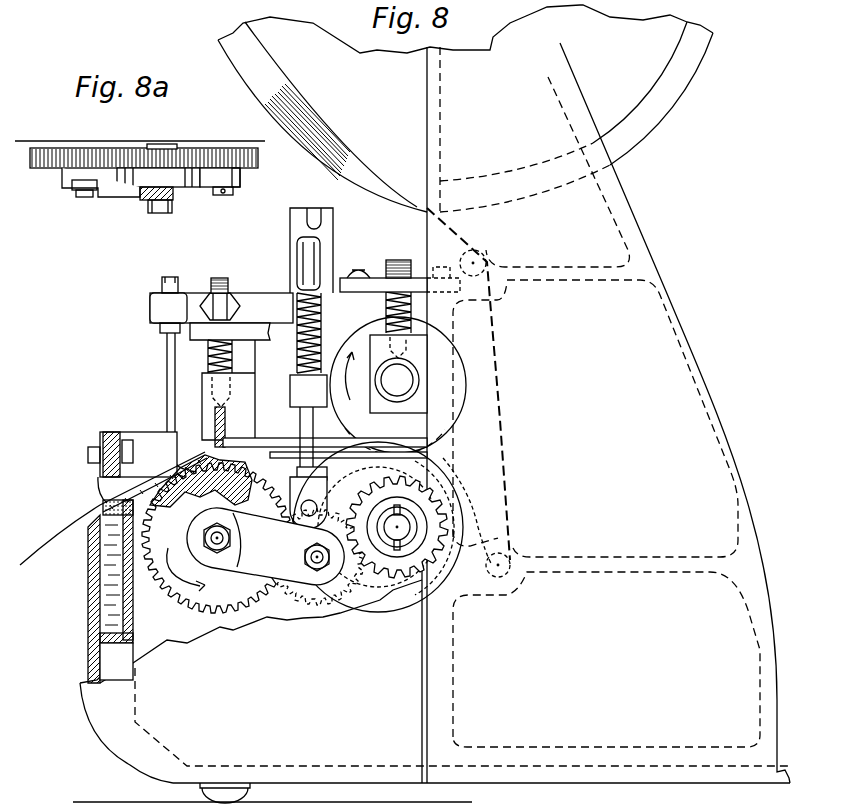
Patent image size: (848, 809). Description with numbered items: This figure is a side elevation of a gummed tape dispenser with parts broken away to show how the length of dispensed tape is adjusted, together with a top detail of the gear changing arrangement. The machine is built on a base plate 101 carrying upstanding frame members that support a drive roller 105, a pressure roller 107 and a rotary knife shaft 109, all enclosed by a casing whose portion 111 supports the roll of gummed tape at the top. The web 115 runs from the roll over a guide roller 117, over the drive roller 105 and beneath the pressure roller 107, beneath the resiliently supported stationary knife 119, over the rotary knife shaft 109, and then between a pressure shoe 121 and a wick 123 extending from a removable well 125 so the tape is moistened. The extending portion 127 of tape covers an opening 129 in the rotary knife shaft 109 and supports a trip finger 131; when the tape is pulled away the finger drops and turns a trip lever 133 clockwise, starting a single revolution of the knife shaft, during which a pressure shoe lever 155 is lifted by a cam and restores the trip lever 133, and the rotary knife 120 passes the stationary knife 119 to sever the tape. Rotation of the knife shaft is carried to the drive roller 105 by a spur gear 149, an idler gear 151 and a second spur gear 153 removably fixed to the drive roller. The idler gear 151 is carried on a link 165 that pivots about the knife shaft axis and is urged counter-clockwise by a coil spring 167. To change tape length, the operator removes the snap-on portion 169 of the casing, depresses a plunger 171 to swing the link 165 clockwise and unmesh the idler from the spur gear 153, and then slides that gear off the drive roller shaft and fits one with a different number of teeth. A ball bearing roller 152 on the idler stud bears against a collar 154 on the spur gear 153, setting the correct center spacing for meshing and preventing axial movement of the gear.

In FIG. 8, the base plate 101 is at (422, 784).
In FIG. 8, the drive roller 105 is at (380, 601).
In FIG. 8, the pressure roller 107 is at (362, 438).
In FIG. 8, the rotary knife shaft 109 is at (247, 462).
In FIG. 8, the casing portion 111 is at (693, 358).
In FIG. 8, the web 115 is at (500, 408).
In FIG. 8, the guide roller 117 is at (488, 256).
In FIG. 8, the stationary knife 119 is at (518, 584).
In FIG. 8, the rotary knife 120 is at (225, 497).
In FIG. 8, the pressure shoe 121 is at (100, 487).
In FIG. 8, the wick 123 is at (115, 513).
In FIG. 8, the removable well 125 is at (88, 611).
In FIG. 8, the extending portion of the tape 127 is at (72, 522).
In FIG. 8, the opening 129 is at (199, 530).
In FIG. 8, the trip finger 131 is at (166, 360).
In FIG. 8, the trip lever 133 is at (272, 294).
In FIG. 8, the spur gear 149 is at (190, 600).
In FIG. 8A, the spur gear 149 is at (50, 147).
In FIG. 8, the idler gear 151 is at (300, 597).
In FIG. 8A, the idler gear 151 is at (157, 150).
In FIG. 8, the ball bearing roller 152 is at (310, 601).
In FIG. 8A, the ball bearing roller 152 is at (185, 175).
In FIG. 8, the second spur gear 153 is at (383, 581).
In FIG. 8A, the second spur gear 153 is at (237, 150).
In FIG. 8, the collar 154 is at (417, 533).
In FIG. 8A, the collar 154 is at (240, 180).
In FIG. 8, the pressure shoe lever 155 is at (158, 434).
In FIG. 8, the link 165 is at (273, 563).
In FIG. 8A, the link 165 is at (130, 195).
In FIG. 8, the coil spring 167 is at (260, 388).
In FIG. 8, the snap-on portion 169 is at (100, 738).
In FIG. 8, the plunger 171 is at (298, 251).